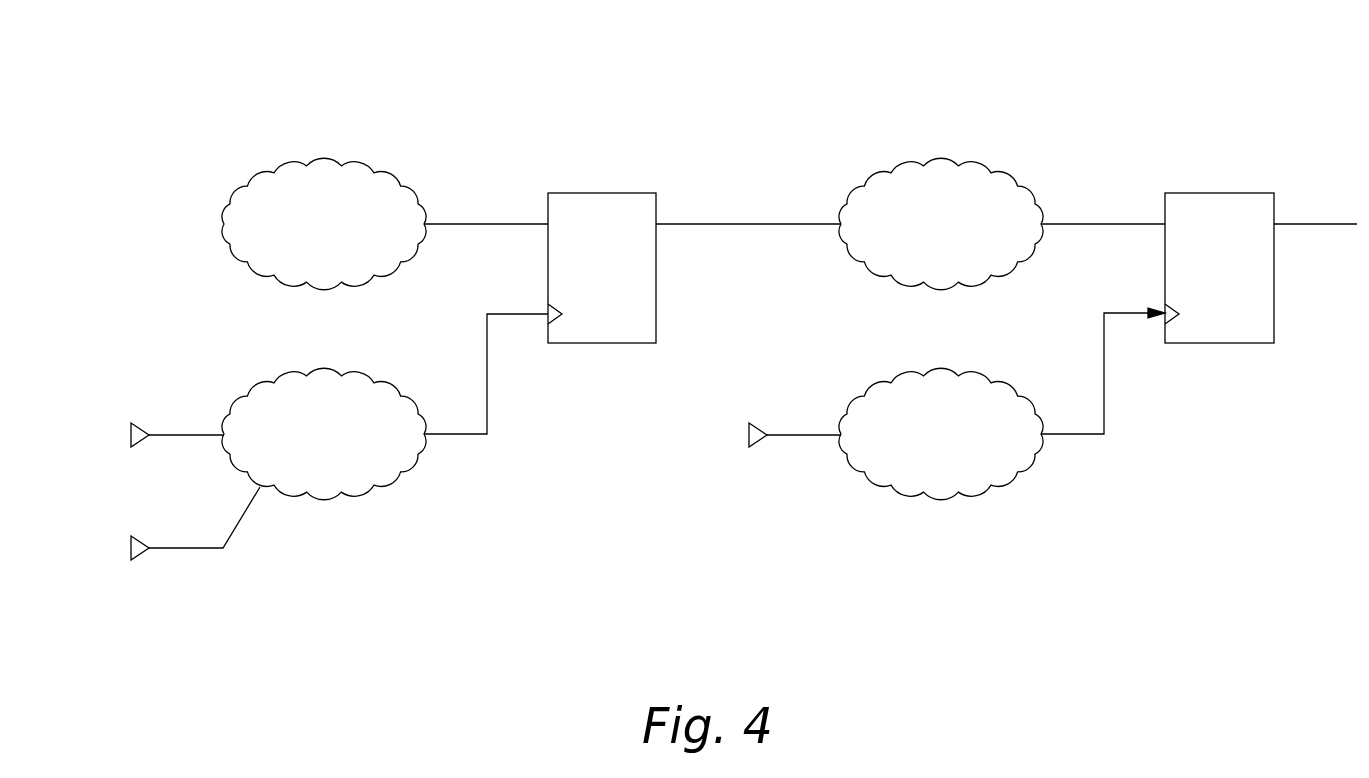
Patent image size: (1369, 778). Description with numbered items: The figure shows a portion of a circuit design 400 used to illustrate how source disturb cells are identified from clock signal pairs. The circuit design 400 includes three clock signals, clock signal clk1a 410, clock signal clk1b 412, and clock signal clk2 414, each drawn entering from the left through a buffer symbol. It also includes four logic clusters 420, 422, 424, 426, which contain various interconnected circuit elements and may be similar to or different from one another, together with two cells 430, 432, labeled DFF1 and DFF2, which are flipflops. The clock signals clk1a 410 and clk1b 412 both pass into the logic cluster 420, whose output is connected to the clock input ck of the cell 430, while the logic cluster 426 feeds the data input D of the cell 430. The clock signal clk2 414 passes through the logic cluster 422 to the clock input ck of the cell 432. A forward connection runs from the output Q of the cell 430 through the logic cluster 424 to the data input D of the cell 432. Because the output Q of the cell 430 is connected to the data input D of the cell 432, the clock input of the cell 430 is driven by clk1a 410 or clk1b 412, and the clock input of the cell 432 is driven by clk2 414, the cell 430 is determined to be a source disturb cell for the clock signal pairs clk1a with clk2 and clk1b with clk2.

The circuit design 400 is at (1196, 68).
The clock signal clk1a 410 is at (140, 421).
The clock signal clk1b 412 is at (140, 533).
The clock signal clk2 414 is at (757, 423).
The logic cluster 420 is at (303, 448).
The logic cluster 422 is at (920, 448).
The logic cluster 424 is at (920, 238).
The logic cluster 426 is at (303, 238).
The cell 430 is at (578, 194).
The cell 432 is at (1196, 194).